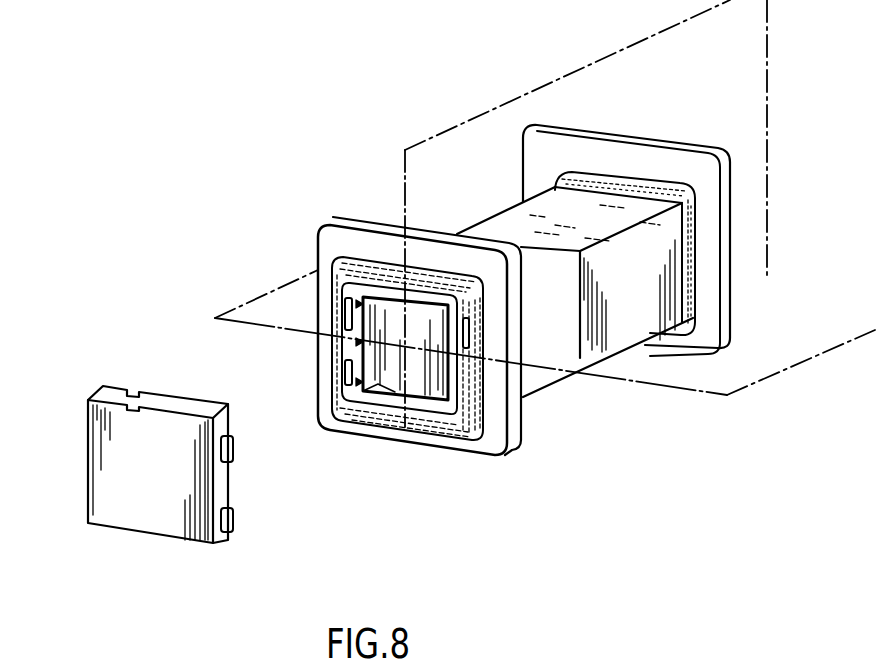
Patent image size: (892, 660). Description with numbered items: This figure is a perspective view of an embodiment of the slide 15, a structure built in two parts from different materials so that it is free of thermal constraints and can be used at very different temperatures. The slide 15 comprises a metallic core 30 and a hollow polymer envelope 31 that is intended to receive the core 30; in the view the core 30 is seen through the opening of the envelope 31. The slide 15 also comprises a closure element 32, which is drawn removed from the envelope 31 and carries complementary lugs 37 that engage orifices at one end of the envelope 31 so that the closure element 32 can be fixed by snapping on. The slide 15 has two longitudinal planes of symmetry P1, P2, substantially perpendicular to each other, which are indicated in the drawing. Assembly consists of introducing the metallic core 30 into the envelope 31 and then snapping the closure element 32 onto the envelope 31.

The slide 15 is at (465, 466).
The metallic core 30 is at (436, 376).
The hollow polymer envelope 31 is at (559, 386).
The closure element 32 is at (138, 500).
The lugs 37 is at (242, 517).
The longitudinal plane of symmetry P1 is at (277, 313).
The longitudinal plane of symmetry P2 is at (425, 162).